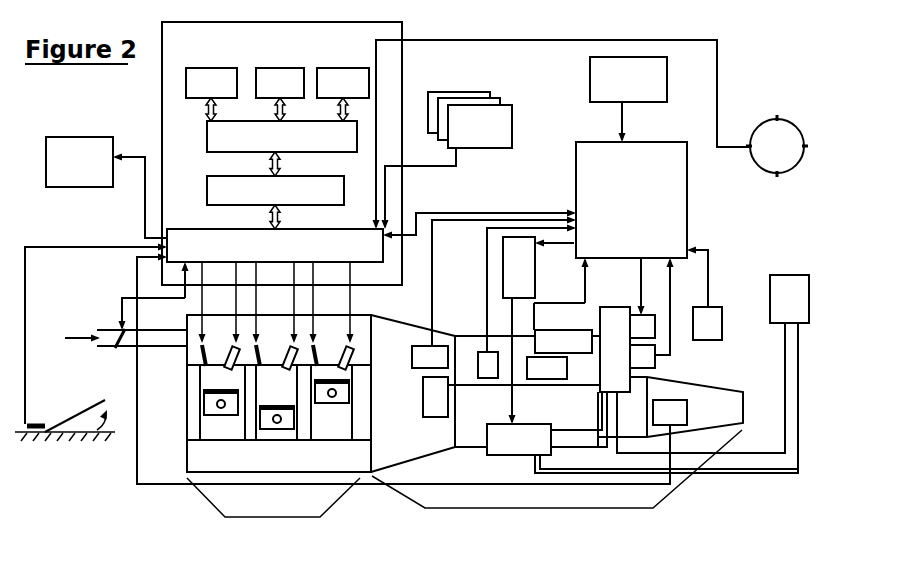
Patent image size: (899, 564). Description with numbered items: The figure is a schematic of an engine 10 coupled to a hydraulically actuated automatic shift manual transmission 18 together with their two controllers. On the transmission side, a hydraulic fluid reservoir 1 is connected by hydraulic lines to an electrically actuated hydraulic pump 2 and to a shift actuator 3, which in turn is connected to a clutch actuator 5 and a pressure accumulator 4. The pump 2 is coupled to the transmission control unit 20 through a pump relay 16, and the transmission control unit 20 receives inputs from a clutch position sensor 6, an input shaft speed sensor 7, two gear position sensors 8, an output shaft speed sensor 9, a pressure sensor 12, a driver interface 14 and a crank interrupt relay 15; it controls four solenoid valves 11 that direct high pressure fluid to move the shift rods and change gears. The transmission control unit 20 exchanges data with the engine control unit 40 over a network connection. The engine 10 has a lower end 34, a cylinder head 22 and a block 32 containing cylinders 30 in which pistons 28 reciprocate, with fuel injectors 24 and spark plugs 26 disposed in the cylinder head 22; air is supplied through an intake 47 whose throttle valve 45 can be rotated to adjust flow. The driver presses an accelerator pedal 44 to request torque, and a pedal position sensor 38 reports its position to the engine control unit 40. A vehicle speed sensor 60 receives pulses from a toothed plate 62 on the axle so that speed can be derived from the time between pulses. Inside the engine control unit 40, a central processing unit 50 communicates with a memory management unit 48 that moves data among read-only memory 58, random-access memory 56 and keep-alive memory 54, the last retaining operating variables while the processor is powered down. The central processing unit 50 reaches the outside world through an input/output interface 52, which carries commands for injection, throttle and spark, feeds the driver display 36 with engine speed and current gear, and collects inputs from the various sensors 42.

The hydraulic fluid reservoir 1 is at (789, 299).
The hydraulic pump 2 is at (642, 398).
The shift actuator 3 is at (692, 380).
The pressure accumulator 4 is at (563, 341).
The clutch actuator 5 is at (435, 397).
The clutch position sensor 6 is at (430, 357).
The input shaft speed sensor 7 is at (488, 365).
The gear position sensors 8 is at (547, 368).
The output shaft speed sensor 9 is at (412, 369).
The engine 10 is at (278, 517).
The solenoid valves 11 is at (642, 326).
The pressure sensor 12 is at (642, 356).
The driver interface 14 is at (667, 75).
The crank interrupt relay 15 is at (707, 323).
The pump relay 16 is at (538, 330).
The ASM transmission 18 is at (545, 508).
The transmission control unit 20 is at (631, 200).
The cylinder head 22 is at (276, 303).
The fuel injectors 24 is at (200, 360).
The spark plugs 26 is at (223, 365).
The pistons 28 is at (206, 392).
The cylinders 30 is at (206, 410).
The block 32 is at (192, 433).
The lower end 34 is at (266, 458).
The driver display 36 is at (100, 137).
The pedal position sensor 38 is at (38, 422).
The engine control unit 40 is at (162, 117).
The sensors 42 is at (487, 92).
The accelerator pedal 44 is at (76, 415).
The throttle valve 45 is at (117, 349).
The intake 47 is at (105, 329).
The memory management unit 48 is at (207, 148).
The central processing unit 50 is at (207, 198).
The input/output interface 52 is at (218, 229).
The keep-alive memory 54 is at (214, 68).
The random-access memory 56 is at (285, 68).
The read-only memory 58 is at (351, 68).
The vehicle speed sensor 60 is at (736, 149).
The plate 62 is at (777, 146).